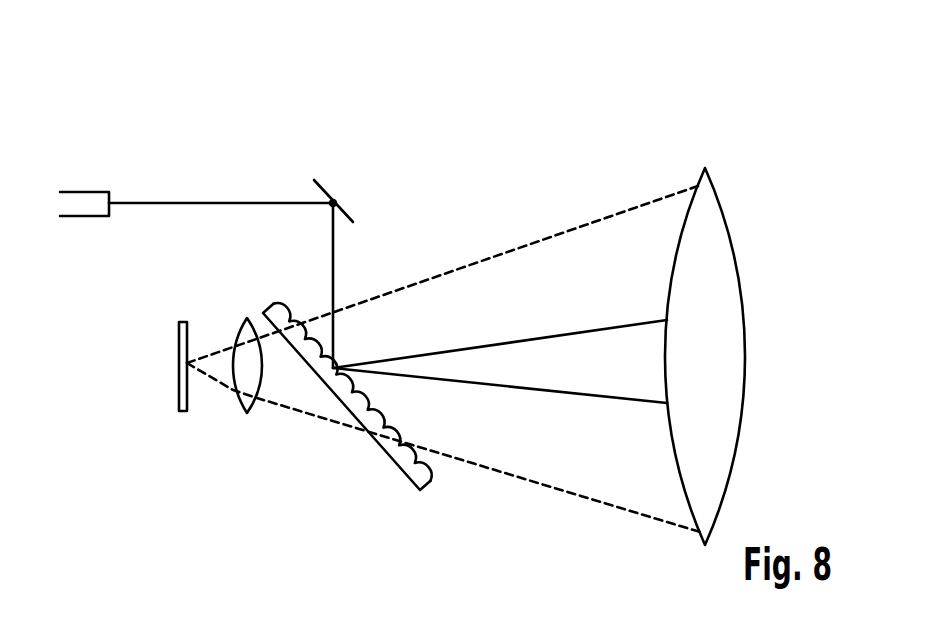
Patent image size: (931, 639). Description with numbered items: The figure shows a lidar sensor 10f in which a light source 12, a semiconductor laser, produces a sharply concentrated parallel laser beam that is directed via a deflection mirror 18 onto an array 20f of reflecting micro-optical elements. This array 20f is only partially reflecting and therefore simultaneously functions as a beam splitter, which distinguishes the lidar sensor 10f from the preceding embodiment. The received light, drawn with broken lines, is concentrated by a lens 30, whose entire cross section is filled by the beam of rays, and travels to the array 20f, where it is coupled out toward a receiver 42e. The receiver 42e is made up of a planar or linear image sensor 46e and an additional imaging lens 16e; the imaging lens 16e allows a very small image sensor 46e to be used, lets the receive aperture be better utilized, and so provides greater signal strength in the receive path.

The lidar sensor 10f is at (417, 108).
The light source 12 is at (82, 192).
The deflection mirror 18 is at (327, 193).
The array of reflecting micro-optical elements 20f is at (389, 477).
The lens 30 is at (717, 200).
The imaging lens 16e is at (247, 413).
The image sensor 46e is at (179, 339).
The receiver 42e is at (148, 394).